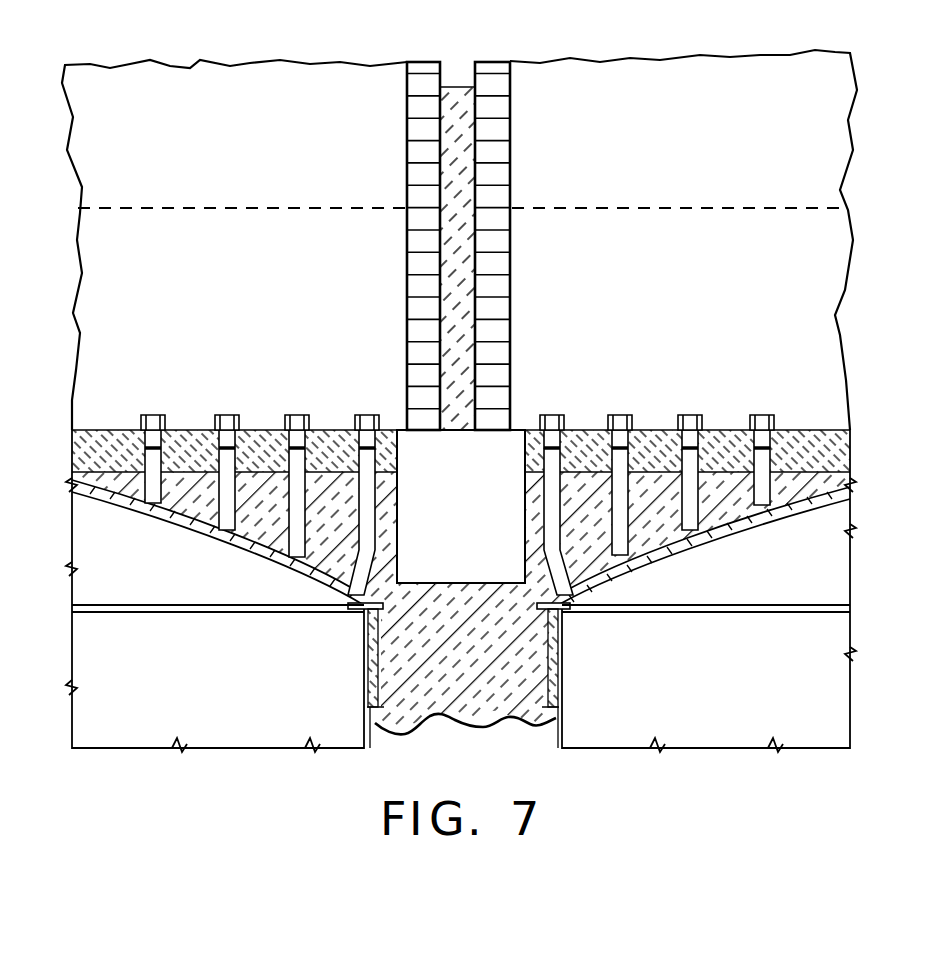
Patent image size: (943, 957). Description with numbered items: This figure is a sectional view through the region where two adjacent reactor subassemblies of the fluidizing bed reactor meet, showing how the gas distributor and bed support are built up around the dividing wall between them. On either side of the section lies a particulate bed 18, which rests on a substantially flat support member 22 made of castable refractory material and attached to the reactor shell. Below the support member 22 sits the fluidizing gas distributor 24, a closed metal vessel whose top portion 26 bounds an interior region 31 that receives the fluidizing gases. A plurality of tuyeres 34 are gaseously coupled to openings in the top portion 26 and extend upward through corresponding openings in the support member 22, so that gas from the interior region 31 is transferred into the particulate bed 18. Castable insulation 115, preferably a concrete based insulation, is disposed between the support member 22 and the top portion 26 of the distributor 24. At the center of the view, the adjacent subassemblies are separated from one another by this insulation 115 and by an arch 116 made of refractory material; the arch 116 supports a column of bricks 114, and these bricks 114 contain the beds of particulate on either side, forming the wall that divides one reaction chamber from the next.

The particulate bed 18 is at (212, 277).
The support member 22 is at (96, 428).
The fluidizing gas distributor 24 is at (110, 518).
The top portion 26 is at (195, 533).
The interior region 31 is at (207, 658).
The tuyeres 34 is at (357, 416).
The bricks 114 is at (420, 70).
The insulation 115 is at (449, 100).
The arch 116 is at (481, 509).